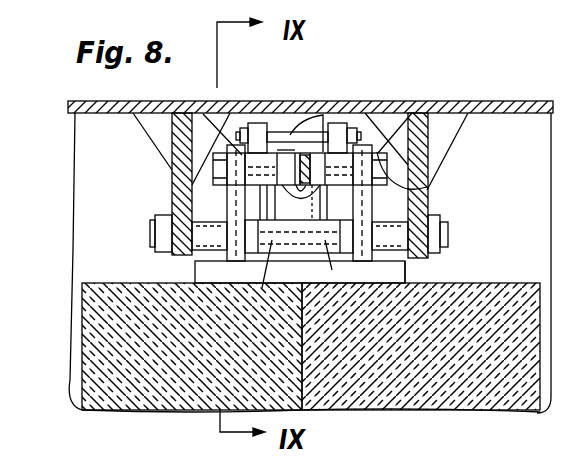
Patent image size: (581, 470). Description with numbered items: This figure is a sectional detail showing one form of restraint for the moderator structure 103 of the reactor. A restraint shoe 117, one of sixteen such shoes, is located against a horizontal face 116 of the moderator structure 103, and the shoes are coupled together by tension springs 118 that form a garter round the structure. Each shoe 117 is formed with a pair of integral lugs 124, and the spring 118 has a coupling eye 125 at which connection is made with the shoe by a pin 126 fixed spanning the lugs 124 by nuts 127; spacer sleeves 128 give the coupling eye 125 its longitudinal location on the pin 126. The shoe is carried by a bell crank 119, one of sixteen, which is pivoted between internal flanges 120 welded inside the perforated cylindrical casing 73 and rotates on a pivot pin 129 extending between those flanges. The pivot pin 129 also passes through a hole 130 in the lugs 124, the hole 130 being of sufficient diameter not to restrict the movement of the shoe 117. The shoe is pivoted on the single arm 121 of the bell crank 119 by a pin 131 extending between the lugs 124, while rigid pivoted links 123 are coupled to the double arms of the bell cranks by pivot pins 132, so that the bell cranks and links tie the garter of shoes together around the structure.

The perforated cylindrical casing 73 is at (96, 100).
The moderator structure 103 is at (103, 358).
The horizontal faces 116 is at (462, 283).
The restraint shoes 117 is at (213, 272).
The tension springs 118 is at (292, 150).
The bell cranks 119 is at (272, 240).
The internal flanges 120 is at (440, 229).
The arms 121 is at (310, 238).
The rigid pivoted links 123 is at (248, 123).
The lugs 124 is at (205, 113).
The coupling eyes 125 is at (318, 150).
The pin 126 is at (452, 152).
The nuts 127 is at (427, 186).
The spacer sleeves 128 is at (366, 113).
The pivot pins 129 is at (200, 240).
The holes 130 is at (237, 215).
The pins 131 is at (325, 240).
The pivot pins 132 is at (333, 119).